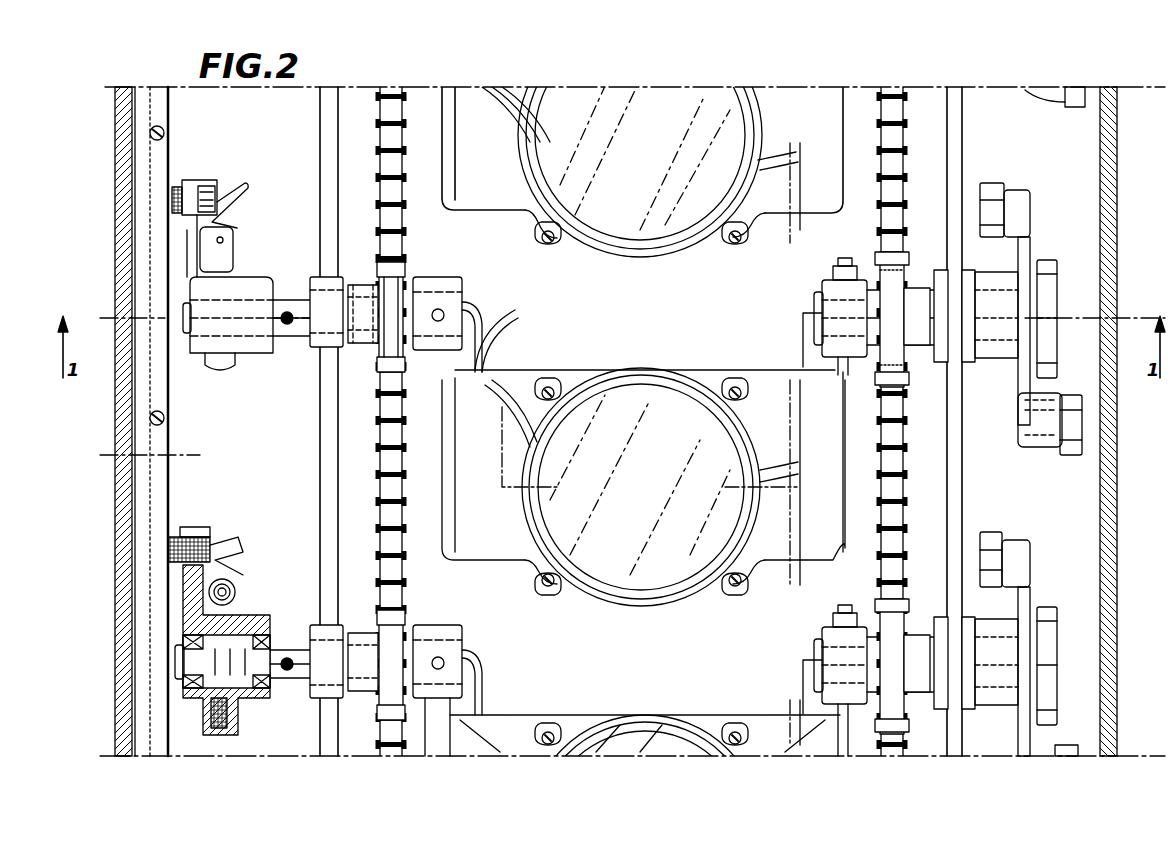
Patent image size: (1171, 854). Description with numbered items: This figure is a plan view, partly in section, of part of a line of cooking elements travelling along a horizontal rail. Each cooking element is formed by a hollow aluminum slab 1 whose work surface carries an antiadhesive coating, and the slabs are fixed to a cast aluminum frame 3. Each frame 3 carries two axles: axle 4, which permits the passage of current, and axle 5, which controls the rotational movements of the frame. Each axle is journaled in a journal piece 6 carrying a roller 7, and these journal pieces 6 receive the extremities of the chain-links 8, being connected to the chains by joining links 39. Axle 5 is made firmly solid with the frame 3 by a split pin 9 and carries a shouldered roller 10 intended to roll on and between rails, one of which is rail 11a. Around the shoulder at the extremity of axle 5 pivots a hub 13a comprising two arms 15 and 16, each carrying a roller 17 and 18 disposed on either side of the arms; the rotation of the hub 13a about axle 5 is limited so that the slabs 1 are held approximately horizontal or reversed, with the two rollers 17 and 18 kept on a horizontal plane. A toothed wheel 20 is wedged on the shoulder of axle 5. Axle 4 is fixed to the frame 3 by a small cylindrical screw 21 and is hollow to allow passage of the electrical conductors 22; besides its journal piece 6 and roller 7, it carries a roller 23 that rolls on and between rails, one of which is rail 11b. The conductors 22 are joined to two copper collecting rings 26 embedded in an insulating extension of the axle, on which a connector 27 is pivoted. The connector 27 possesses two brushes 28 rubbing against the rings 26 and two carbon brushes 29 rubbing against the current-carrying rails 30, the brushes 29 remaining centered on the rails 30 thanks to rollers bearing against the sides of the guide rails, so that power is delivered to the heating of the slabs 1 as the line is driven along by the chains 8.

The hollow aluminum slab 1 is at (632, 410).
The frame 3 is at (562, 378).
The axle 4 is at (467, 310).
The axle 5 is at (817, 303).
The journal piece 6 is at (392, 298).
The roller 7 is at (367, 306).
The chain-links 8 is at (906, 408).
The split pin 9 is at (846, 262).
The shouldered roller 10 is at (972, 274).
The rail 11a is at (950, 505).
The rail 11b is at (330, 422).
The hub 13a is at (996, 358).
The arm 15 is at (1040, 396).
The arm 16 is at (1024, 262).
The roller 17 is at (1068, 424).
The roller 18 is at (990, 200).
The toothed wheel 20 is at (1045, 325).
The small cylindrical screw 21 is at (441, 308).
The electrical conductors 22 is at (497, 356).
The roller 23 is at (327, 298).
The copper collecting rings 26 is at (220, 665).
The connector 27 is at (240, 268).
The brushes 28 is at (215, 367).
The brushes 29 is at (176, 188).
The current-carrying rails 30 is at (167, 492).
The joining links 39 is at (879, 262).